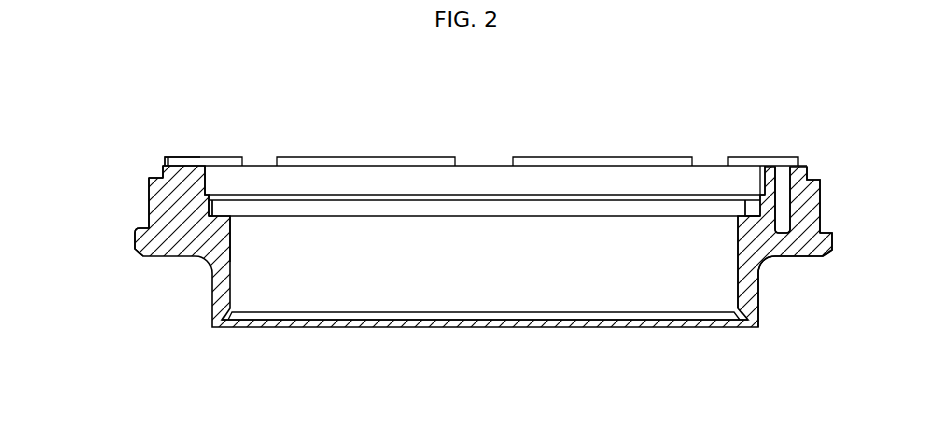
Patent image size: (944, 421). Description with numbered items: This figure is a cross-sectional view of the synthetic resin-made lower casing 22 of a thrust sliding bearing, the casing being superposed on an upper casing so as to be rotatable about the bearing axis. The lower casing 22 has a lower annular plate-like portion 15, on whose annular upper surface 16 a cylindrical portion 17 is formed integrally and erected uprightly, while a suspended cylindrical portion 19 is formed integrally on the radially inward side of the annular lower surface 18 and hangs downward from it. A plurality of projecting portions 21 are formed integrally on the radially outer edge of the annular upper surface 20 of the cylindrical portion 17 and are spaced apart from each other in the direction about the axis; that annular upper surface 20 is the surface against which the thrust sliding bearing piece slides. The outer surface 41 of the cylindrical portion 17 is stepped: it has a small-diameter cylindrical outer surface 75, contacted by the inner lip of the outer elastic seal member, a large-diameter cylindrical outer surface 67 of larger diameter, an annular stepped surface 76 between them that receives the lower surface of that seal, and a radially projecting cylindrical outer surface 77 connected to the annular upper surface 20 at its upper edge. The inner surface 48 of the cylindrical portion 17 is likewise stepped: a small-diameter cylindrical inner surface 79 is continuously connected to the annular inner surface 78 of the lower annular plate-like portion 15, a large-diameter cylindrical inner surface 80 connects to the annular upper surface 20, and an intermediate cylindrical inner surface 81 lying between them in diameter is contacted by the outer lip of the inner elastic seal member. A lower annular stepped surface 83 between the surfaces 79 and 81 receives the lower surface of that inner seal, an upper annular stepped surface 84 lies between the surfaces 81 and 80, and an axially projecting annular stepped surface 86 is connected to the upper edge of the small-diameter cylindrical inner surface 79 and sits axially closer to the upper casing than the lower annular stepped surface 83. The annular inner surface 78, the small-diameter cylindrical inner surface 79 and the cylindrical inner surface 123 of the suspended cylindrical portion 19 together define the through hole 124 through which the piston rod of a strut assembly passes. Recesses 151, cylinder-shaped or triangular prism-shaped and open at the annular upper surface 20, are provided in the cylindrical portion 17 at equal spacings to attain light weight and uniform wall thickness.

The lower annular plate-like portion 15 is at (174, 238).
The annular upper surface 16 is at (146, 228).
The cylindrical portion 17 is at (808, 189).
The annular lower surface 18 is at (795, 258).
The suspended cylindrical portion 19 is at (752, 297).
The annular upper surface 20 is at (307, 158).
The projecting portions 21 is at (173, 153).
The lower casing 22 is at (180, 152).
The outer surface 41 is at (822, 208).
The inner surface 48 is at (213, 170).
The large-diameter cylindrical outer surface 67 is at (150, 197).
The small-diameter cylindrical outer surface 75 is at (162, 178).
The annular stepped surface 76 is at (815, 178).
The radially projecting cylindrical outer surface 77 is at (162, 162).
The annular inner surface 78 is at (737, 250).
The small-diameter cylindrical inner surface 79 is at (230, 222).
The large-diameter cylindrical inner surface 80 is at (763, 178).
The intermediate cylindrical inner surface 81 is at (213, 200).
The lower annular stepped surface 83 is at (753, 213).
The upper annular stepped surface 84 is at (475, 195).
The axially projecting annular stepped surface 86 is at (427, 216).
The cylindrical inner surface 123 is at (232, 277).
The through hole 124 is at (450, 270).
The recesses 151 is at (783, 183).